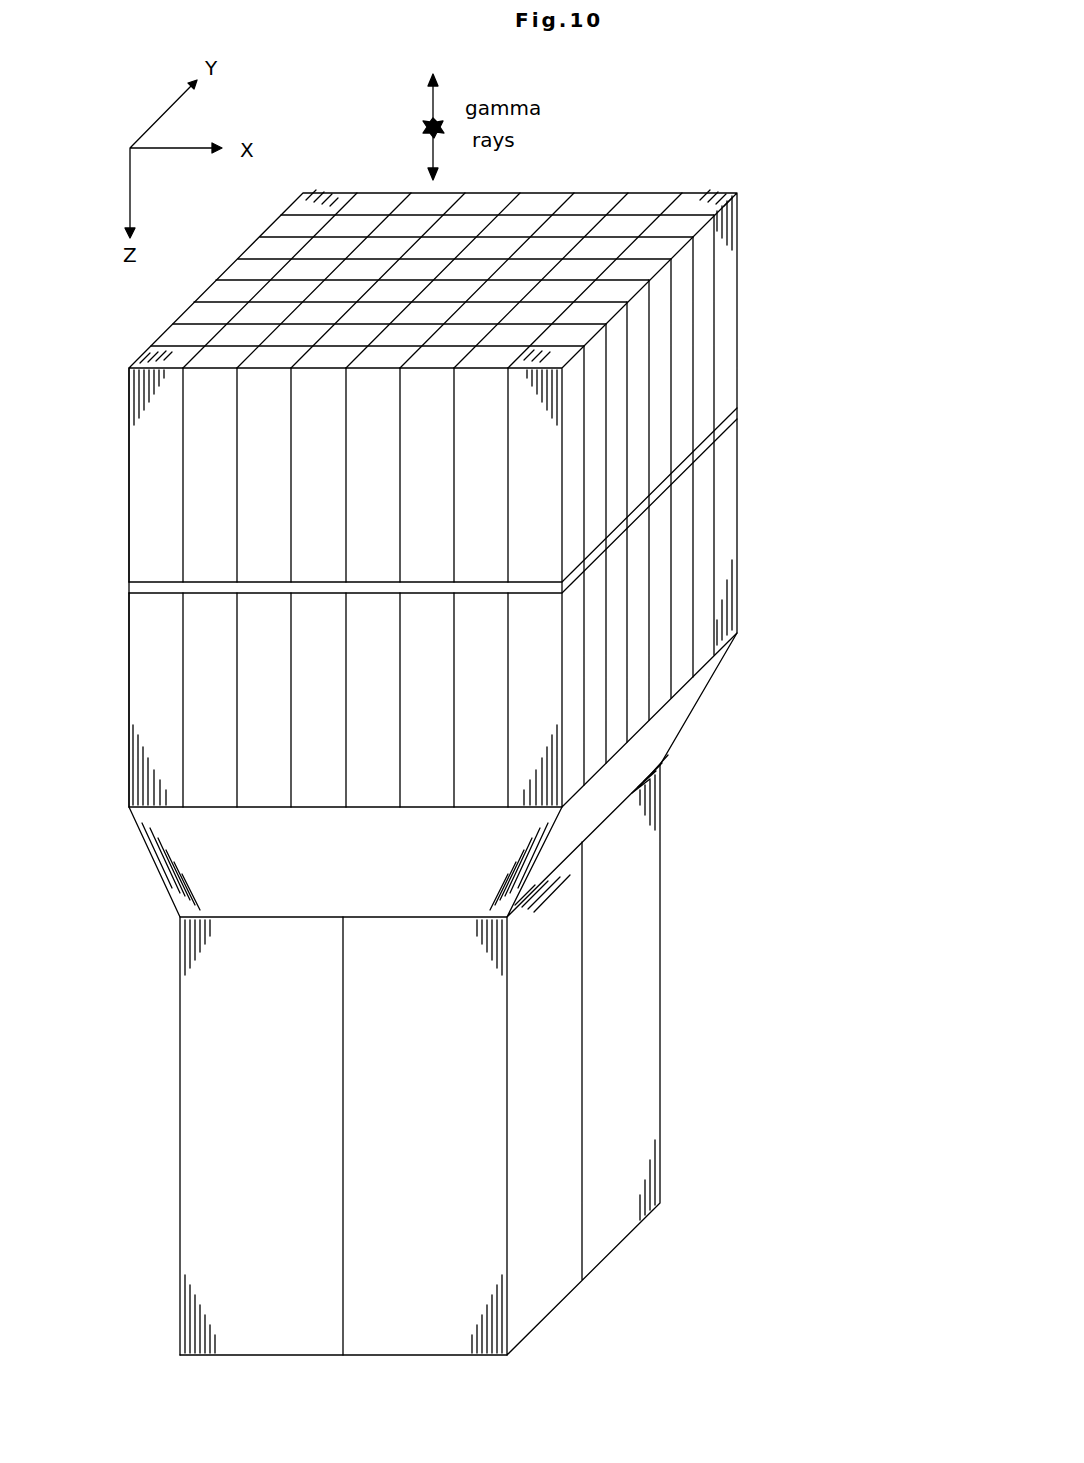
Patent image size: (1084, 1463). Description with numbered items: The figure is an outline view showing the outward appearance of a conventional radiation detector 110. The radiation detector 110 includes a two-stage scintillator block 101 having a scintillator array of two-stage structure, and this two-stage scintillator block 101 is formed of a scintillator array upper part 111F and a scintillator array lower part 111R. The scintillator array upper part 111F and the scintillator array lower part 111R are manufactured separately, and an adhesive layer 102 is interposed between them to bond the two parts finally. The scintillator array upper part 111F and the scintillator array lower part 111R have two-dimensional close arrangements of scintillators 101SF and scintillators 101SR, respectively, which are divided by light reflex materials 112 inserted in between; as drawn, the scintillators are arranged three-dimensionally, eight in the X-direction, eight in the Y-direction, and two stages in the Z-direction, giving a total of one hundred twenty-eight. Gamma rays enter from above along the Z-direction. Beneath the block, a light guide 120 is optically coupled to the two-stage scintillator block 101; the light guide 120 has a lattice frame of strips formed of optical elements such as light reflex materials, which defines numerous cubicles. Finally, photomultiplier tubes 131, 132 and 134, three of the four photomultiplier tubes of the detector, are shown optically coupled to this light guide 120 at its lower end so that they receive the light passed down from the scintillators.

The two-stage scintillator block 101 is at (851, 299).
The light reflex materials 112 is at (272, 237).
The scintillator array upper part 111F is at (768, 194).
The scintillator array lower part 111R is at (768, 425).
The adhesive layer 102 is at (135, 590).
The scintillators 101SF is at (140, 477).
The scintillators 101SR is at (137, 697).
The light guide 120 is at (700, 693).
The photomultiplier tube 131 is at (183, 1186).
The photomultiplier tube 132 is at (540, 1314).
The photomultiplier tube 134 is at (610, 1243).
The radiation detector 110 is at (890, 196).